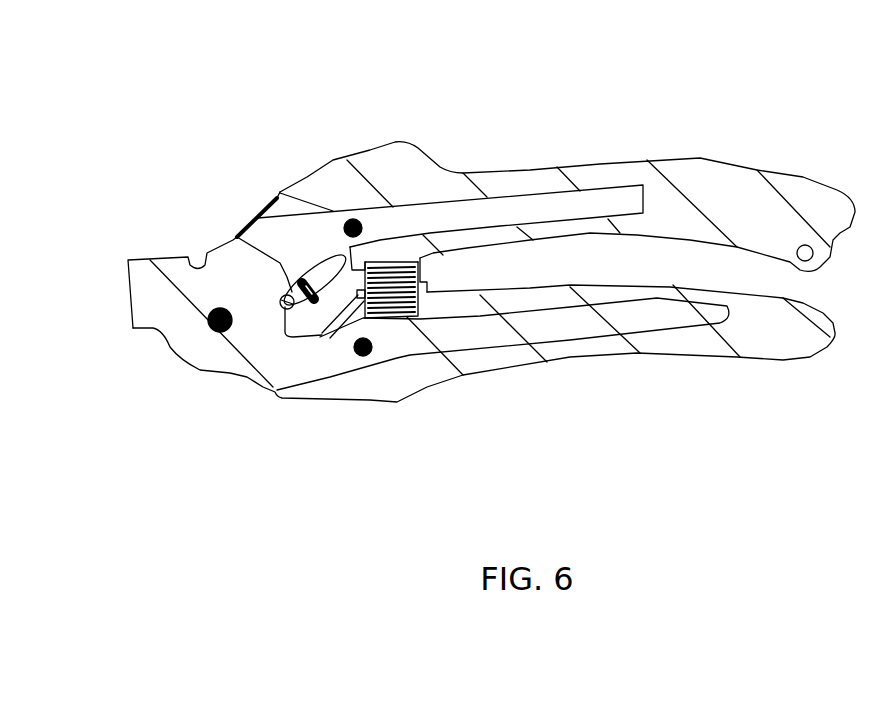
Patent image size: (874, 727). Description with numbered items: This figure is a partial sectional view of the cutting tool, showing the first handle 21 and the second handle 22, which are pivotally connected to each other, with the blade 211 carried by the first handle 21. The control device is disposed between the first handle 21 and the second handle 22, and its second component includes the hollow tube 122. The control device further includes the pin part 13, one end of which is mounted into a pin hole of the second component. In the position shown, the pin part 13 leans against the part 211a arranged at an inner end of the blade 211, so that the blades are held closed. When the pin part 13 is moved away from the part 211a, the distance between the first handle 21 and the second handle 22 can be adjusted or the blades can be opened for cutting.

The first handle 21 is at (703, 177).
The second handle 22 is at (430, 382).
The blade 211 is at (160, 258).
The part 211a is at (292, 290).
The hollow tube 122 is at (302, 297).
The pin part 13 is at (283, 306).